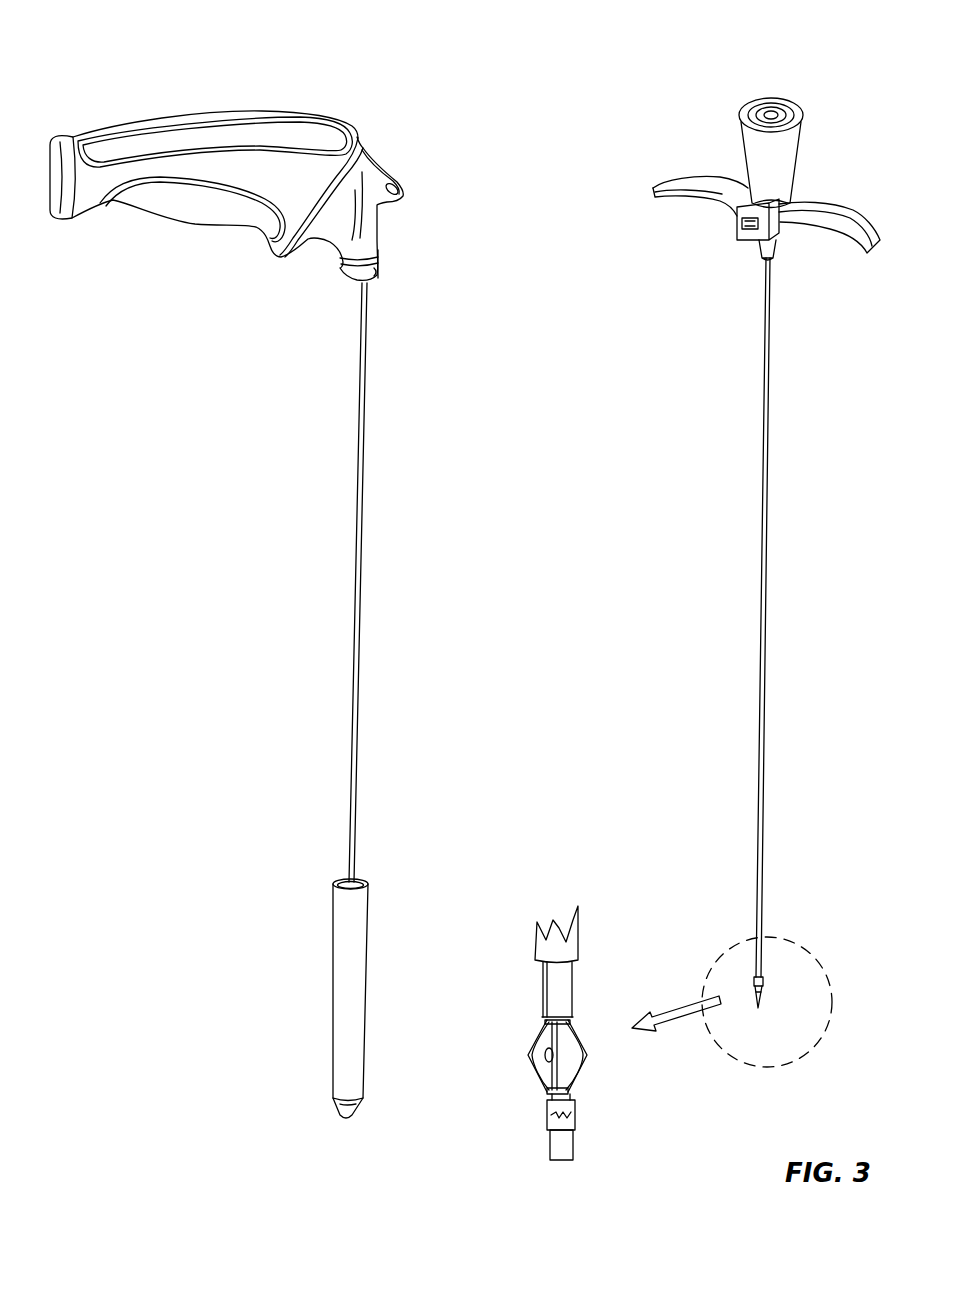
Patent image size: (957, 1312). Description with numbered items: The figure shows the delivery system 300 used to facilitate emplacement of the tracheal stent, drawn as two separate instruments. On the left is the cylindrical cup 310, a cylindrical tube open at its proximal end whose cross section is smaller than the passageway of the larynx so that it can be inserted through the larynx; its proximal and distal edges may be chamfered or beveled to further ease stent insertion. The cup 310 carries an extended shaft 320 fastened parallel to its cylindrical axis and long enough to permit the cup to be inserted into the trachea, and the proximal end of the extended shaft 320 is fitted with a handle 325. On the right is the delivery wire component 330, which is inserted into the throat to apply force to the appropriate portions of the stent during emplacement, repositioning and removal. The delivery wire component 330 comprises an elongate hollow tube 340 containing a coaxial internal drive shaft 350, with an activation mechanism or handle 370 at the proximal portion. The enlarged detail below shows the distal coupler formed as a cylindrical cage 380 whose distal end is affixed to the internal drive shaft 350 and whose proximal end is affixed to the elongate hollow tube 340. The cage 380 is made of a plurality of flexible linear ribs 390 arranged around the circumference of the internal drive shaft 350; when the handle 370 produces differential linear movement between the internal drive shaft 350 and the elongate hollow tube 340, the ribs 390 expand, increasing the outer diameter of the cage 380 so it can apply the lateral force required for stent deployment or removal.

The delivery system 300 is at (637, 101).
The cylindrical cup 310 is at (323, 1034).
The extended shaft 320 is at (341, 616).
The handle 325 is at (195, 232).
The delivery wire component 330 is at (702, 437).
The elongate hollow tube 340 is at (767, 842).
The internal drive shaft 350 is at (580, 1152).
The activation mechanism or handle 370 is at (710, 232).
The cylindrical cage 380 is at (508, 1080).
The flexible linear ribs 390 is at (532, 1042).